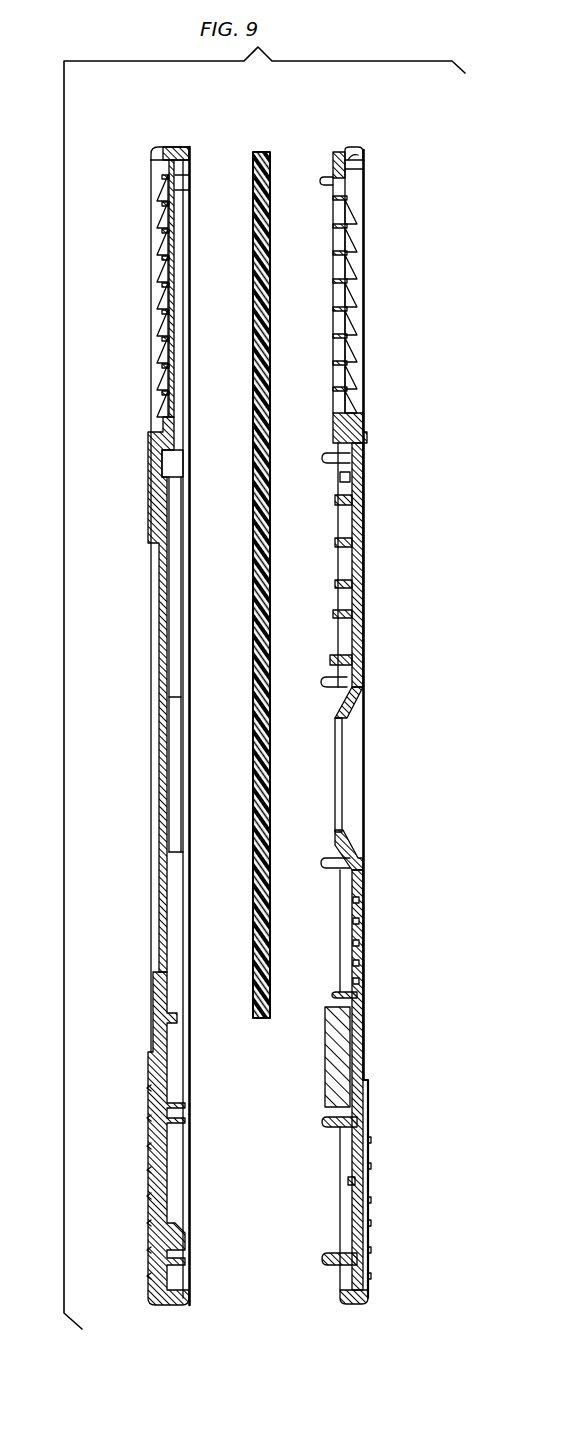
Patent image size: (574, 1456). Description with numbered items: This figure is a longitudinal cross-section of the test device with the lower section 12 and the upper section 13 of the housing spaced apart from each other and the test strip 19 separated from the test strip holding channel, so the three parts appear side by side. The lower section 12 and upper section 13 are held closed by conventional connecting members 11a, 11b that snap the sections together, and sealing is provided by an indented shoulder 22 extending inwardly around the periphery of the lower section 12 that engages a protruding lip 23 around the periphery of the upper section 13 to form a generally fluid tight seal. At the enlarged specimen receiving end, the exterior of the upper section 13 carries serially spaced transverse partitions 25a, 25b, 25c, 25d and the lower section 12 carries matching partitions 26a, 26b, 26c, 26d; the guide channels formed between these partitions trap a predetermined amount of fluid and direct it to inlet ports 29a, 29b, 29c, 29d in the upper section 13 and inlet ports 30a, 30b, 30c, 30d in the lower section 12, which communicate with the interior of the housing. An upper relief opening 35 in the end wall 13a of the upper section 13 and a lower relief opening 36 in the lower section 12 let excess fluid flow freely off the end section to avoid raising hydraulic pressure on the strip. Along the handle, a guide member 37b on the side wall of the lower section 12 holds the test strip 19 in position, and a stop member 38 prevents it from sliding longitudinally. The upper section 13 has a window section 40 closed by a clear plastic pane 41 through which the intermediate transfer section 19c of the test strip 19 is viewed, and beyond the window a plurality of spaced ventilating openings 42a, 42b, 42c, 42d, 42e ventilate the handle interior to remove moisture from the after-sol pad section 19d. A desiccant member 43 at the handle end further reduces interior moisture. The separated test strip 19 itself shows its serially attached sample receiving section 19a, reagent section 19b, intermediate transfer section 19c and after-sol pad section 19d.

The connecting member 11a is at (323, 180).
The connecting member 11b is at (190, 177).
The lower section 12 is at (362, 570).
The upper section 13 is at (155, 512).
The end wall 13a is at (353, 164).
The test strip 19 is at (285, 652).
The sample receiving section 19a is at (271, 490).
The reagent section 19b is at (271, 533).
The intermediate transfer section 19c is at (271, 597).
The after-sol pad section 19d is at (262, 827).
The indented shoulder 22 is at (343, 150).
The protruding lip 23 is at (178, 153).
The partition 25a is at (350, 193).
The partition 25b is at (350, 222).
The partition 25c is at (350, 252).
The partition 25d is at (350, 283).
The partition 26a is at (162, 192).
The partition 26b is at (162, 225).
The partition 26c is at (160, 262).
The partition 26d is at (160, 300).
The inlet port 29a is at (362, 197).
The inlet port 29b is at (362, 227).
The inlet port 29c is at (362, 257).
The inlet port 29d is at (362, 287).
The inlet port 30a is at (172, 196).
The inlet port 30b is at (173, 225).
The inlet port 30c is at (172, 256).
The inlet port 30d is at (172, 290).
The upper outlet or relief opening 35 is at (356, 150).
The lower outlet or relief opening 36 is at (152, 153).
The guide member 37b is at (172, 781).
The stop member 38 is at (160, 1034).
The window section 40 is at (357, 710).
The clear plastic pane 41 is at (343, 770).
The ventilating opening 42a is at (360, 900).
The ventilating opening 42b is at (360, 920).
The ventilating opening 42c is at (362, 943).
The ventilating opening 42d is at (362, 962).
The fifth groove 42e is at (362, 981).
The desiccant member 43 is at (338, 1057).